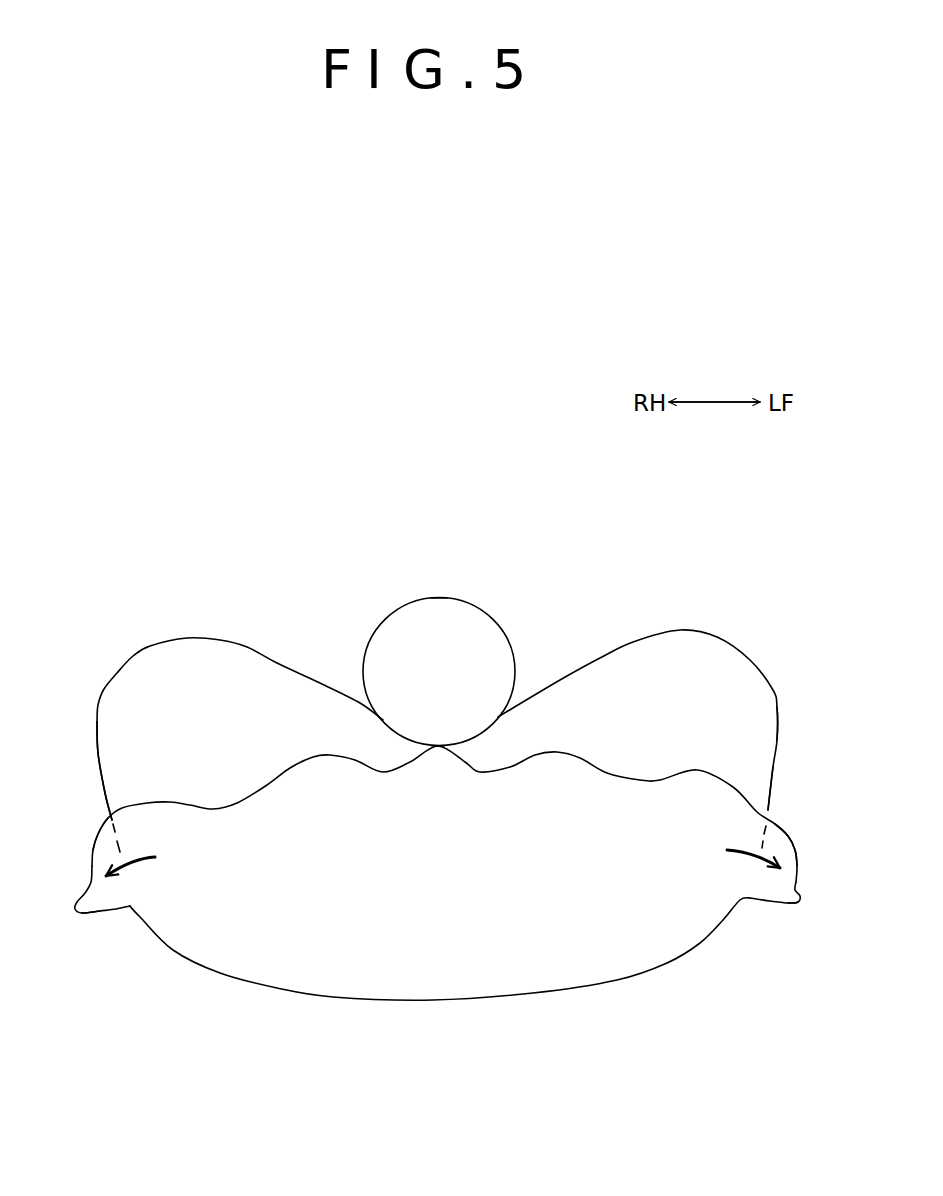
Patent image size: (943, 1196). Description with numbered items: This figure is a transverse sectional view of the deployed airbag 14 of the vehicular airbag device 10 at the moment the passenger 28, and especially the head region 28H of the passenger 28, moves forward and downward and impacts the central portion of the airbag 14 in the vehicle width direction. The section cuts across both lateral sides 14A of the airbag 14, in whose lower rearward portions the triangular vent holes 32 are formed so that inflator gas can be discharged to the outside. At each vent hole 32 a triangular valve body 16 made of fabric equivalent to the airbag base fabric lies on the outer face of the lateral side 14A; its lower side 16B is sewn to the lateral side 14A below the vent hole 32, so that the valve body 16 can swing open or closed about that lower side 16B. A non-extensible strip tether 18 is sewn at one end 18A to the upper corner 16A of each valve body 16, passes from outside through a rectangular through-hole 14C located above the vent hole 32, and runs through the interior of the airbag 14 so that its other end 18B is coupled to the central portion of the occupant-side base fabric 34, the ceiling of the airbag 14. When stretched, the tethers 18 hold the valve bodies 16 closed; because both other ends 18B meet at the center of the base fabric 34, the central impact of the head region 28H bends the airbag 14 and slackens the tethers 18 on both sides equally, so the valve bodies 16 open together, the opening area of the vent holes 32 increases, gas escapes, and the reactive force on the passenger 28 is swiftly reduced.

The vehicular airbag device 10 is at (649, 534).
The airbag 14 is at (690, 629).
The lateral sides 14A is at (97, 760).
The through-holes 14C is at (103, 815).
The valve bodies 16 is at (104, 918).
The upper corner 16A is at (88, 890).
The lower side 16B is at (130, 920).
The tethers 18 is at (269, 787).
The one end 18A is at (87, 915).
The other end 18B is at (438, 749).
The passenger 28 is at (504, 612).
The head region 28H is at (440, 597).
The vent holes 32 is at (128, 876).
The occupant-side base fabric 34 is at (313, 673).